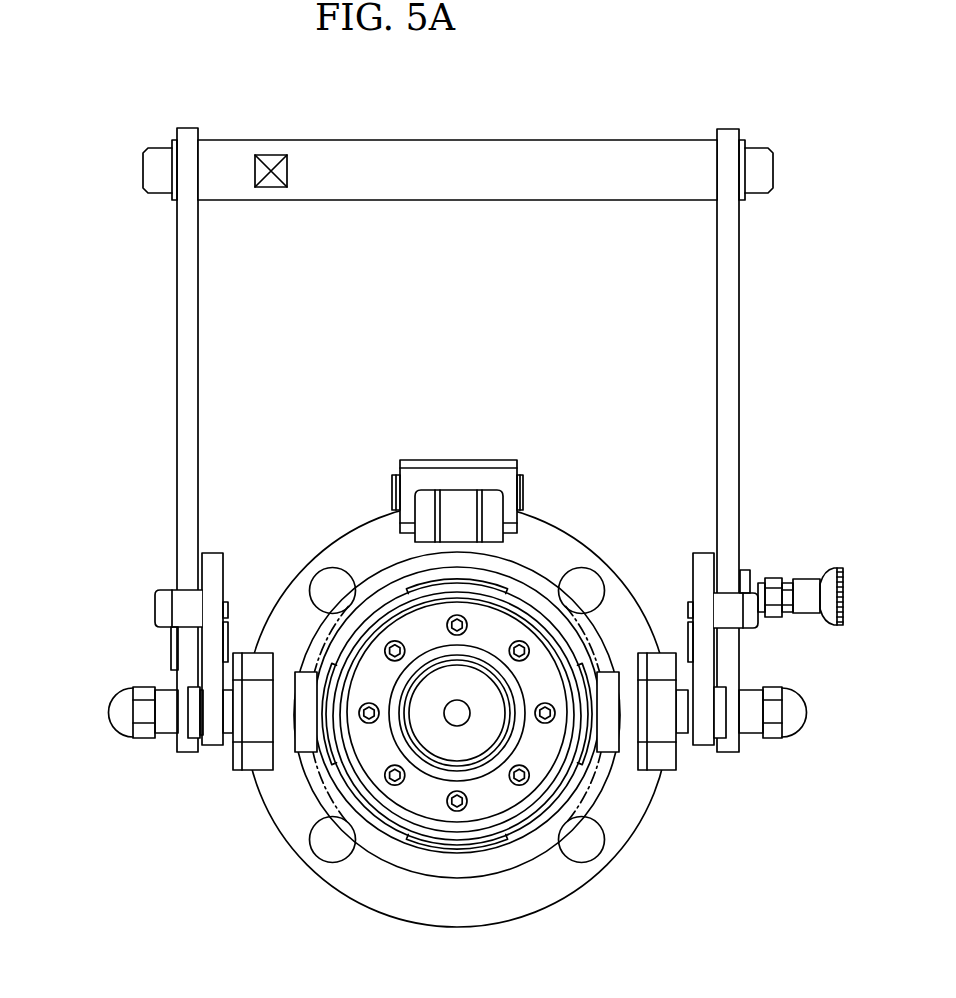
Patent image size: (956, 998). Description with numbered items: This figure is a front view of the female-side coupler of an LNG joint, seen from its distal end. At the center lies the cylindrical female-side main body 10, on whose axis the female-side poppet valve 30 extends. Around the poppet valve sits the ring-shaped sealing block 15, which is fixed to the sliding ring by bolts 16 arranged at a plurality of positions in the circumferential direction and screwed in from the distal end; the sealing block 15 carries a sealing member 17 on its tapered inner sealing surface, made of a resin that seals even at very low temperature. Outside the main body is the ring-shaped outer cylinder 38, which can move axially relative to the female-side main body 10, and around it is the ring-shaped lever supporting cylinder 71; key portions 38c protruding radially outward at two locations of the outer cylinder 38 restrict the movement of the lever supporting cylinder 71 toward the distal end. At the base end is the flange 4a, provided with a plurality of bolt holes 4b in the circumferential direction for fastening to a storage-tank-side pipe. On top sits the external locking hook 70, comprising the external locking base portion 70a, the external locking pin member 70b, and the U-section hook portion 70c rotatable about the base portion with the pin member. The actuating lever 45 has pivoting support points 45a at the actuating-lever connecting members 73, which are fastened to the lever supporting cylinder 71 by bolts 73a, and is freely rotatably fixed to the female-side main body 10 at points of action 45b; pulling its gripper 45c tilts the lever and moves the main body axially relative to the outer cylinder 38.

The actuating lever 45 is at (458, 395).
The pivoting support point 45a is at (832, 567).
The point of action 45b is at (123, 703).
The gripper 45c is at (530, 185).
The actuating-lever connecting member 73 is at (214, 560).
The bolt for the actuating-lever connecting member 73a is at (190, 718).
The external locking hook 70 is at (449, 474).
The external locking base portion 70a is at (415, 527).
The external locking pin member 70b is at (522, 490).
The hook portion 70c is at (418, 475).
The flange 4a is at (600, 543).
The bolt hole 4b is at (598, 573).
The lever supporting cylinder 71 is at (548, 843).
The outer cylinder 38 is at (577, 788).
The key portion 38c is at (307, 748).
The female-side main body 10 is at (560, 762).
The sealing block 15 is at (413, 795).
The bolt 16 is at (392, 648).
The sealing member 17 is at (488, 772).
The female-side poppet valve 30 is at (447, 744).